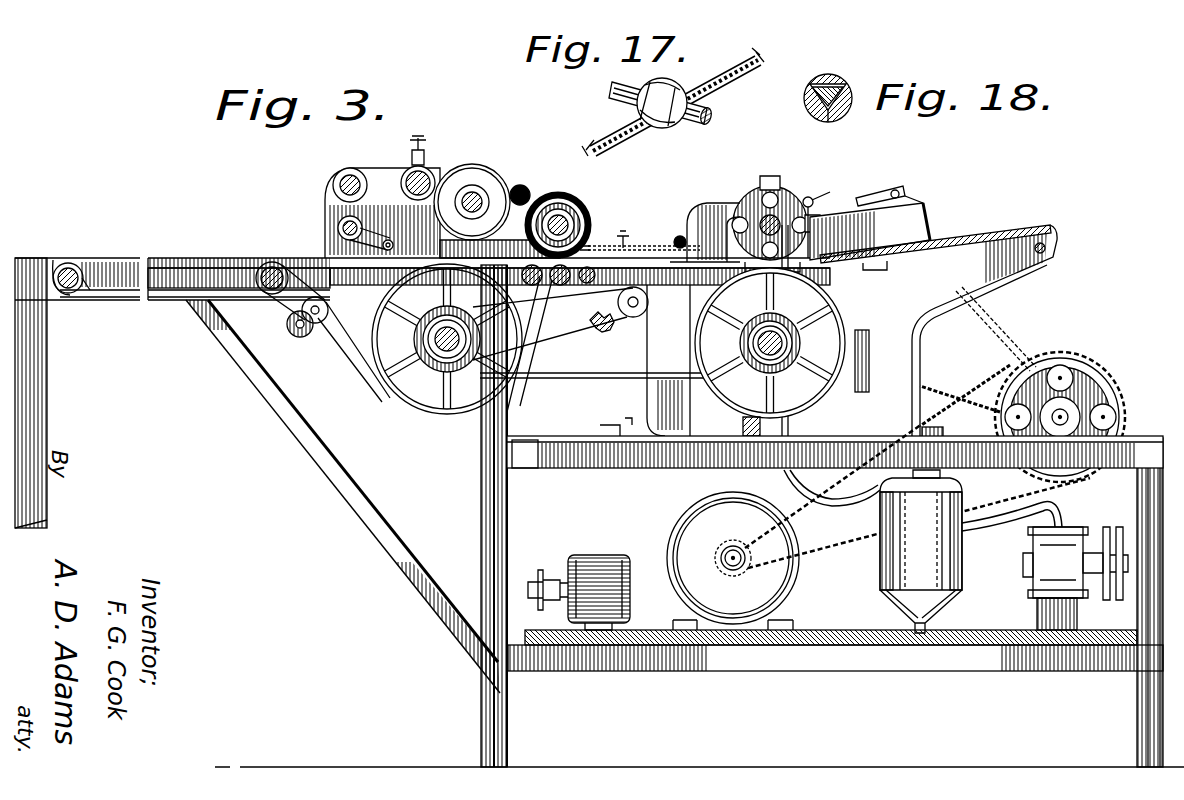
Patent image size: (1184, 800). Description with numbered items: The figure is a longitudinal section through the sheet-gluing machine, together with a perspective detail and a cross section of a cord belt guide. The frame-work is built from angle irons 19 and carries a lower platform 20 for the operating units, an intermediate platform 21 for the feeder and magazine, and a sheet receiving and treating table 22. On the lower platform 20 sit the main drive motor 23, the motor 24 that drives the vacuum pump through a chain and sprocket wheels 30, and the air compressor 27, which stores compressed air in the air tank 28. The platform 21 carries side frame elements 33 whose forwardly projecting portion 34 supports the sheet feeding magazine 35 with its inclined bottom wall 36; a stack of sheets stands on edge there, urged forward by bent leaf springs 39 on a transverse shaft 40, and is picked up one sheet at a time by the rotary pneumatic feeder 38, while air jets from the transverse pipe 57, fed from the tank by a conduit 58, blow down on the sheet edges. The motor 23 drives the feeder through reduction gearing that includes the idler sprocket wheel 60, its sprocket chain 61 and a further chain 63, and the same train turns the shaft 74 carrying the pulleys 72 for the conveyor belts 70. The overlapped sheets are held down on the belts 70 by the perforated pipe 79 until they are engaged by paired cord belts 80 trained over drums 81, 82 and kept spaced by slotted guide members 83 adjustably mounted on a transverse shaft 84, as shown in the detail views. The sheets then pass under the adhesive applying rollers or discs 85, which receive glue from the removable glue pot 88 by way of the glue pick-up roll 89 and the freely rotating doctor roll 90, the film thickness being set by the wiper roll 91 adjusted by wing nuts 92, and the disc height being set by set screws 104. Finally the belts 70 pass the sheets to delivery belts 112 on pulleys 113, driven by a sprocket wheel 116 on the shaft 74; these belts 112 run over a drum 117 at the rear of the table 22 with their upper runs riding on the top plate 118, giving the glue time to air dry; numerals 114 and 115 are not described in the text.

In FIG. 3, the angle irons 19 is at (40, 400).
In FIG. 3, the lower platform 20 is at (835, 630).
In FIG. 3, the intermediate platform 21 is at (612, 468).
In FIG. 3, the sheet receiving and treating table 22 is at (110, 262).
In FIG. 3, the main drive motor 23 is at (708, 520).
In FIG. 3, the motor 24 is at (590, 646).
In FIG. 3, the air compressor 27 is at (1040, 578).
In FIG. 3, the air tank 28 is at (945, 575).
In FIG. 3, the sprocket wheels 30 is at (542, 605).
In FIG. 3, the side frame elements 33 is at (880, 354).
In FIG. 3, the forwardly projecting portion 34 is at (990, 280).
In FIG. 3, the sheet feeding magazine 35 is at (915, 215).
In FIG. 3, the inclined bottom wall 36 is at (905, 259).
In FIG. 3, the rotary pneumatic feeder 38 is at (762, 195).
In FIG. 3, the bent leaf springs 39 is at (866, 205).
In FIG. 3, the transverse shaft 40 is at (905, 192).
In FIG. 3, the transverse pipe 57 is at (815, 202).
In FIG. 3, the conduit 58 is at (917, 496).
In FIG. 3, the idler sprocket wheel 60 is at (1090, 385).
In FIG. 3, the sprocket chain 61 is at (1000, 508).
In FIG. 3, the chain 63 is at (990, 330).
In FIG. 3, the conveyor belts 70 is at (830, 312).
In FIG. 3, the pulleys 72 is at (770, 343).
In FIG. 3, the shaft 74 is at (782, 332).
In FIG. 3, the perforated pipe 79 is at (758, 268).
In FIG. 3, the cord belts 80 is at (660, 245).
In FIG. 17, the cord belts 80 is at (634, 135).
In FIG. 3, the drum 81 is at (702, 264).
In FIG. 3, the drum 82 is at (335, 278).
In FIG. 3, the slotted guide members 83 is at (681, 234).
In FIG. 17, the slotted guide members 83 is at (682, 80).
In FIG. 18, the slotted guide members 83 is at (818, 80).
In FIG. 17, the transverse shaft 84 is at (712, 116).
In FIG. 18, the transverse shaft 84 is at (845, 82).
In FIG. 3, the adhesive applying rollers or discs 85 is at (580, 210).
In FIG. 3, the glue pot 88 is at (345, 170).
In FIG. 3, the glue pick-up roll 89 is at (482, 176).
In FIG. 3, the doctor roll 90 is at (528, 190).
In FIG. 3, the wiper roll 91 is at (408, 172).
In FIG. 3, the wing nuts 92 is at (424, 152).
In FIG. 3, the set screws 104 is at (626, 230).
In FIG. 3, the delivery belts 112 is at (360, 352).
In FIG. 3, the pulleys 113 is at (405, 385).
In FIG. 3, the shaft 114 is at (448, 352).
In FIG. 3, the bar 115 is at (574, 378).
In FIG. 3, the sprocket wheel 116 is at (822, 395).
In FIG. 3, the drum 117 is at (84, 296).
In FIG. 3, the top plate 118 is at (222, 262).